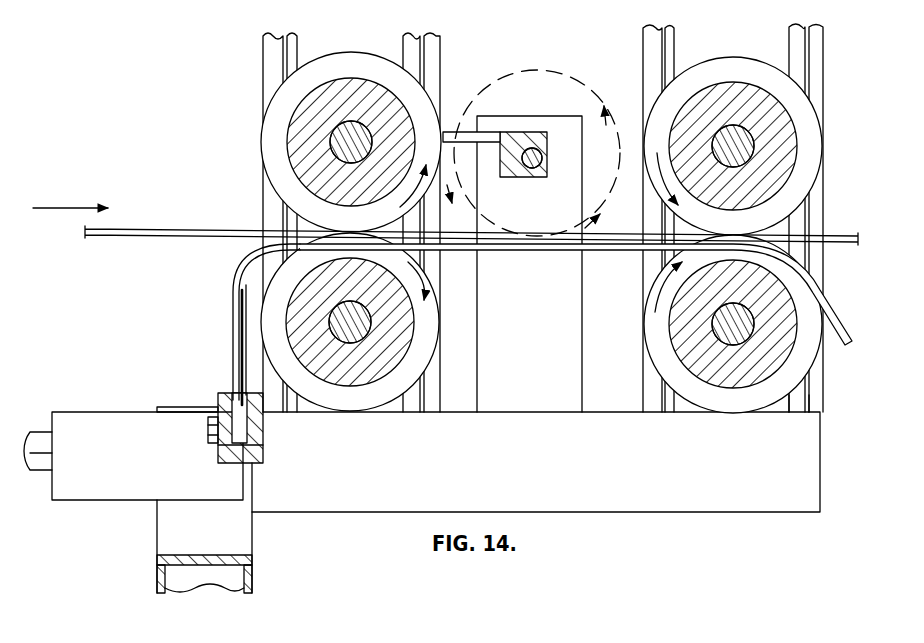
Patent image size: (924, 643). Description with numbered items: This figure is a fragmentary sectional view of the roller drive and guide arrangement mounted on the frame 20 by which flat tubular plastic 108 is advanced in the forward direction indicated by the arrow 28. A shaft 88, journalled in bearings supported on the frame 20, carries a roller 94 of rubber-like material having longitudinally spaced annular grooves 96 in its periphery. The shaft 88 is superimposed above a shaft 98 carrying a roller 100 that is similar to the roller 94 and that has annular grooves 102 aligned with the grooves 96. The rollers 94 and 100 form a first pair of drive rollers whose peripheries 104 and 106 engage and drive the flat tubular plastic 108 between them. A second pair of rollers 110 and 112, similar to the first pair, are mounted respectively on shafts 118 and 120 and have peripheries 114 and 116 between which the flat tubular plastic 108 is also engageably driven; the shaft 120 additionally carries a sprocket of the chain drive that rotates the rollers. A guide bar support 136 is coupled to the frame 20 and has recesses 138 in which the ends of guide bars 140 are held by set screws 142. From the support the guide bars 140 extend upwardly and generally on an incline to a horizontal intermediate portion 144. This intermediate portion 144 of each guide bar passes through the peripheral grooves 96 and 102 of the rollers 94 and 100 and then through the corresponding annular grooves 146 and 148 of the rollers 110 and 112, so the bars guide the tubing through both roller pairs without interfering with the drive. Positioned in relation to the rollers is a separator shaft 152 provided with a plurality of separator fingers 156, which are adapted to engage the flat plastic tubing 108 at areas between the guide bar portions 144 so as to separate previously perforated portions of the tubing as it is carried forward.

The frame 20 is at (135, 502).
The arrow 28 is at (66, 210).
The shaft 88 is at (331, 146).
The roller 94 is at (357, 86).
The annular grooves 96 is at (290, 100).
The shaft 98 is at (333, 316).
The roller 100 is at (421, 328).
The annular grooves 102 is at (364, 392).
The periphery 104 is at (282, 208).
The periphery 106 is at (232, 283).
The flat tubular plastic 108 is at (143, 219).
The roller 110 is at (754, 57).
The roller 112 is at (686, 408).
The periphery 114 is at (806, 97).
The periphery 116 is at (794, 402).
The shaft 118 is at (728, 128).
The shaft 120 is at (720, 318).
The guide bar support 136 is at (268, 451).
The recesses 138 is at (264, 432).
The guide bars 140 is at (233, 368).
The set screws 142 is at (216, 404).
The intermediate portion 144 is at (466, 249).
The annular grooves 146 is at (648, 118).
The annular grooves 148 is at (652, 320).
The separator shaft 152 is at (456, 114).
The separator fingers 156 is at (481, 134).